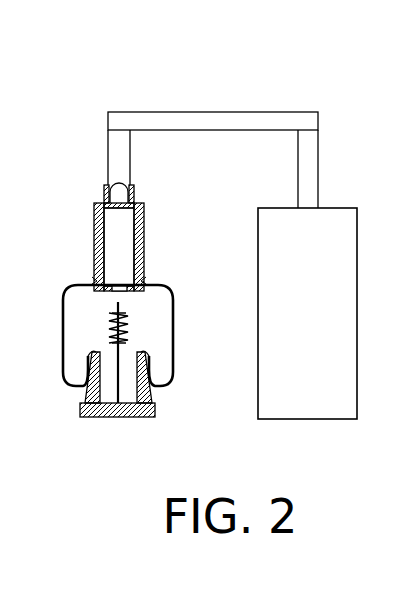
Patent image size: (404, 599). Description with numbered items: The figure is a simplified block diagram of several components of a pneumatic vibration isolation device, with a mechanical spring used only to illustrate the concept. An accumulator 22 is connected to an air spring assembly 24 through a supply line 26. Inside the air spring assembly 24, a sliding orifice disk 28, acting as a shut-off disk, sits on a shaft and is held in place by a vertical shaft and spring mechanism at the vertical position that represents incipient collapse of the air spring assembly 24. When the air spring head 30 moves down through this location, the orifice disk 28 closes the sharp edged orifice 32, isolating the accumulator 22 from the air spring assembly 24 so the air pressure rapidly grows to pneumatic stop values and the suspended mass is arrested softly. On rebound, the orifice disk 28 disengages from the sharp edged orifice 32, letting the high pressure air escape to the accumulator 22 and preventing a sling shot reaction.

The accumulator 22 is at (332, 419).
The air spring assembly 24 is at (175, 300).
The supply line 26 is at (244, 111).
The sliding orifice disk 28 is at (118, 315).
The air spring head 30 is at (94, 281).
The sharp edged orifice 32 is at (122, 284).